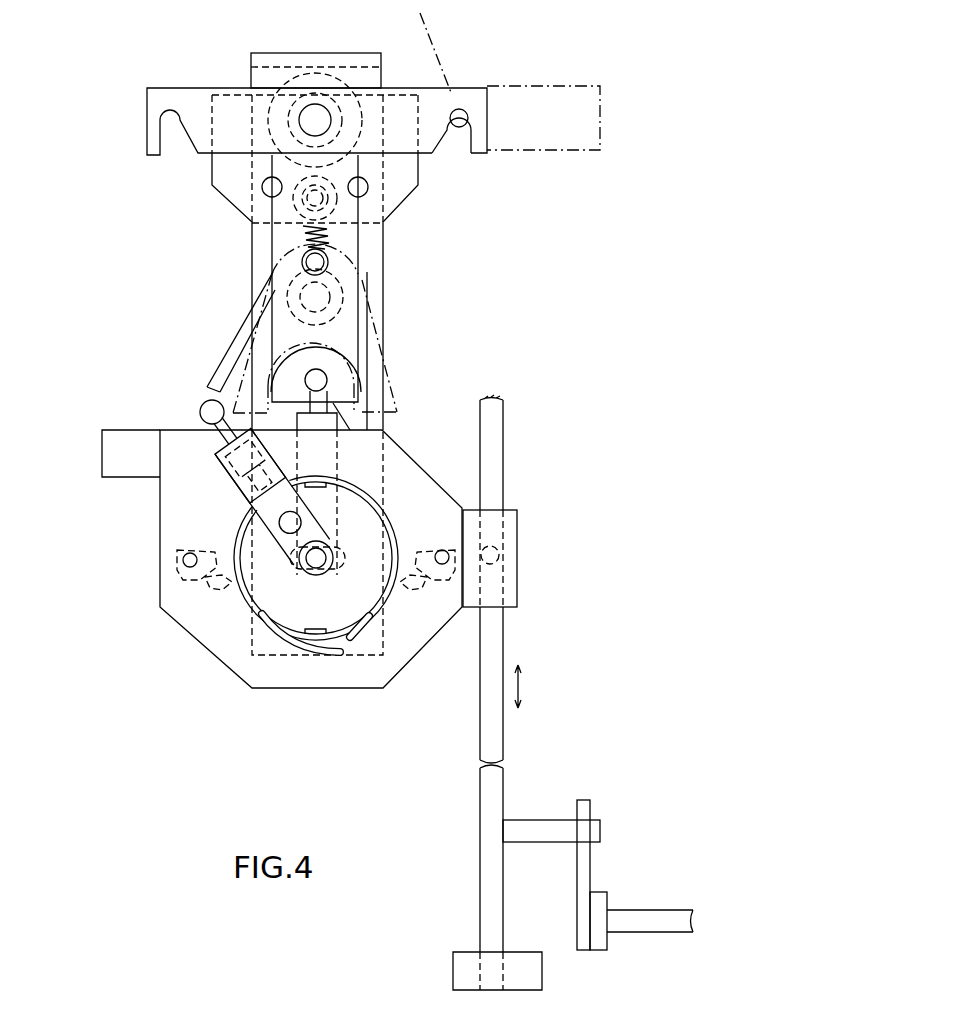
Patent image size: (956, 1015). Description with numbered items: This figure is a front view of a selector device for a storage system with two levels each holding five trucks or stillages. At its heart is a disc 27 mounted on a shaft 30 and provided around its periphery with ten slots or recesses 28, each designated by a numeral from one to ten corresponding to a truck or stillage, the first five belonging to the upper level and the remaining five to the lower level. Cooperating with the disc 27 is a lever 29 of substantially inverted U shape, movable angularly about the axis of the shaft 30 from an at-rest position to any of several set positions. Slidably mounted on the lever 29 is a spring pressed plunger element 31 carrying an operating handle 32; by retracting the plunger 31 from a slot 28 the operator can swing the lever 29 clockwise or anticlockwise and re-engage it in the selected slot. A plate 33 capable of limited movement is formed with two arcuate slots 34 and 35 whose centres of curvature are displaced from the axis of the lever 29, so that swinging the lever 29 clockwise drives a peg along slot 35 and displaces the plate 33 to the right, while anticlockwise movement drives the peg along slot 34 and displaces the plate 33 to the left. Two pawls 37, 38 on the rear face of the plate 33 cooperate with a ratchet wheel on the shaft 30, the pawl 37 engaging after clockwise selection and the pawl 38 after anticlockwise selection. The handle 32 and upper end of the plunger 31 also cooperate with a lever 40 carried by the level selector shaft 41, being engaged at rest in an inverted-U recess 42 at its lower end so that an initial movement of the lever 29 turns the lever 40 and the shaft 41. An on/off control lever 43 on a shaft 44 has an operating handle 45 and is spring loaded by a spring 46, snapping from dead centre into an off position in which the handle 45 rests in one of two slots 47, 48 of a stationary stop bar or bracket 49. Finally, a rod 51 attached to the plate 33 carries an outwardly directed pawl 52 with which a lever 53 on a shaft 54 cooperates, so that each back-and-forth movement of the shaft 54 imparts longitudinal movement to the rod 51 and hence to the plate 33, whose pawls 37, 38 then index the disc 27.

The disc 27 is at (371, 518).
The slots or recesses 28 is at (362, 497).
The lever 29 is at (218, 464).
The shaft 30 is at (318, 568).
The spring pressed plunger element 31 is at (240, 487).
The operating handle 32 is at (207, 401).
The plate 33 is at (410, 467).
The arcuate slot 34 is at (298, 658).
The arcuate slot 35 is at (365, 645).
The pawl 37 is at (180, 580).
The pawl 38 is at (445, 578).
The lever 40 is at (360, 333).
The level selector shaft 41 is at (330, 296).
The recess 42 is at (333, 367).
The on/off control lever 43 is at (562, 97).
The shaft 44 is at (325, 112).
The operating handle 45 is at (459, 109).
The spring 46 is at (432, 23).
The slot 47 is at (181, 112).
The slot 48 is at (470, 130).
The stop bar or bracket 49 is at (477, 90).
The rod 51 is at (503, 633).
The pawl 52 is at (540, 820).
The lever 53 is at (590, 860).
The shaft 54 is at (648, 911).